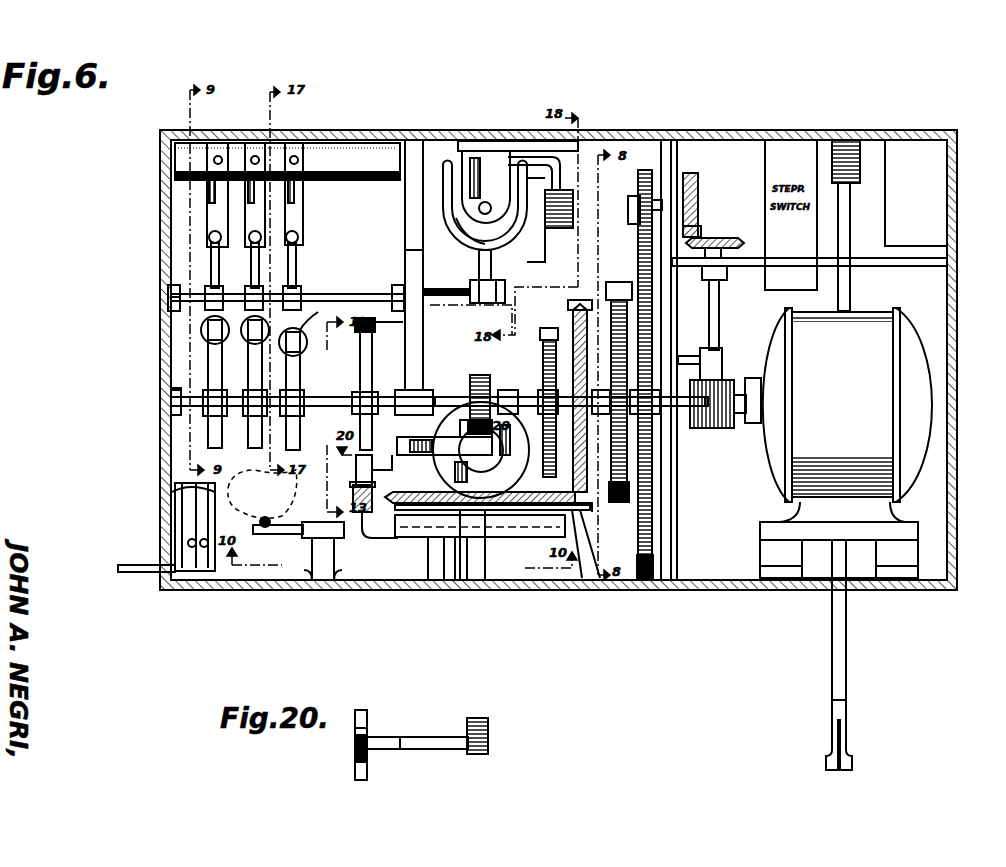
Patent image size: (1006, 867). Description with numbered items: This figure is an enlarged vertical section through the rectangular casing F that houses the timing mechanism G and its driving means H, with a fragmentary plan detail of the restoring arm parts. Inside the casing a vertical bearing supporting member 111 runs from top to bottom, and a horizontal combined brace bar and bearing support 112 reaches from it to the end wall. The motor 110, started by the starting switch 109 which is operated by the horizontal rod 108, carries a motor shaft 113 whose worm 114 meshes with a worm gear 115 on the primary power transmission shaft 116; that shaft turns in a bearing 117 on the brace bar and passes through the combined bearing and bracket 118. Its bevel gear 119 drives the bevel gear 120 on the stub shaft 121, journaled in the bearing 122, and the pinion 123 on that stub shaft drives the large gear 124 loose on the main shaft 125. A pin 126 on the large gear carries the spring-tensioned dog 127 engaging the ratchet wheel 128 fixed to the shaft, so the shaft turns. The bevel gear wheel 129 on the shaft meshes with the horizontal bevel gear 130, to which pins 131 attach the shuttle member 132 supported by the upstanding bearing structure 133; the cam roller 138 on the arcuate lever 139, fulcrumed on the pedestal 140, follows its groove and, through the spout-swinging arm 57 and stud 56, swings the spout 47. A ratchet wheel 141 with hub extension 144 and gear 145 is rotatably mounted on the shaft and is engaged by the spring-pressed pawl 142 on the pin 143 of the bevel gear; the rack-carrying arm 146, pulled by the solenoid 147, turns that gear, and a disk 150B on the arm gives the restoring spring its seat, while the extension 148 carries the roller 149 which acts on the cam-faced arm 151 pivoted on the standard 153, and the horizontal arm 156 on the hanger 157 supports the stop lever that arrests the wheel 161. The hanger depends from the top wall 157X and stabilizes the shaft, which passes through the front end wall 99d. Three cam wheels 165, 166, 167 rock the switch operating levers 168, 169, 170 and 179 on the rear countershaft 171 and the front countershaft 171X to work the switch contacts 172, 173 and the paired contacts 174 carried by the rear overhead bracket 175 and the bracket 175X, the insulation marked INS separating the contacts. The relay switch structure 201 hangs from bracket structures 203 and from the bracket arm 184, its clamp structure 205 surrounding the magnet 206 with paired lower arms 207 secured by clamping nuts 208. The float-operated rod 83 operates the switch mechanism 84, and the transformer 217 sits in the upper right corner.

In FIG. 6, the rear overhead bracket 175 is at (238, 160).
In FIG. 6, the bracket 175X is at (370, 156).
In FIG. 6, the top wall 157X is at (418, 150).
In FIG. 6, the bracket structures 203 is at (490, 160).
In FIG. 6, the stub shaft 121 is at (666, 140).
In FIG. 6, the switch mechanism 84 is at (846, 146).
In FIG. 6, the switch contact 172 is at (214, 192).
In FIG. 6, the switch contact 173 is at (250, 204).
In FIG. 6, the paired contacts 174 is at (303, 202).
In FIG. 6, the insulation INS is at (190, 598).
In FIG. 6, the relay switch structure 201 is at (445, 208).
In FIG. 6, the clamp structure 205 is at (525, 228).
In FIG. 6, the magnet 206 is at (457, 237).
In FIG. 6, the paired lower arms 207 is at (492, 262).
In FIG. 6, the clamping nuts 208 is at (505, 290).
In FIG. 6, the bracket arm 184 is at (450, 288).
In FIG. 6, the switch operating lever 168 is at (211, 256).
In FIG. 6, the switch operating lever 169 is at (258, 250).
In FIG. 6, the switch operating lever 170 is at (298, 256).
In FIG. 6, the front countershaft 171X is at (338, 296).
In FIG. 6, the rear countershaft 171 is at (172, 300).
In FIG. 6, the switch operating lever 179 is at (316, 316).
In FIG. 6, the horizontal arm 156 is at (370, 334).
In FIG. 6, the wheel 161 is at (379, 390).
In FIG. 6, the ratchet wheel 141 is at (545, 380).
In FIG. 6, the hanger 157 is at (423, 372).
In FIG. 6, the gear 145 is at (480, 376).
In FIG. 6, the spring-pressed pawl 142 is at (541, 334).
In FIG. 6, the pin 143 is at (566, 408).
In FIG. 6, the bevel gear wheel 129 is at (572, 316).
In FIG. 6, the bearing 122 is at (686, 200).
In FIG. 6, the bevel gear 120 is at (700, 204).
In FIG. 6, the bevel gear 119 is at (714, 240).
In FIG. 6, the pin 126 is at (640, 252).
In FIG. 6, the spring-tensioned dog 127 is at (618, 296).
In FIG. 6, the pinion 123 is at (638, 180).
In FIG. 6, the main shaft 125 is at (330, 390).
In FIG. 6, the cam wheel 166 is at (250, 416).
In FIG. 6, the cam wheel 167 is at (298, 418).
In FIG. 6, the front end wall 99d is at (171, 372).
In FIG. 6, the cam wheel 165 is at (218, 446).
In FIG. 6, the extension 148 is at (442, 434).
In FIG. 20, the extension 148 is at (414, 736).
In FIG. 6, the rack-carrying arm 146 is at (470, 440).
In FIG. 20, the rack-carrying arm 146 is at (490, 736).
In FIG. 6, the solenoid 147 is at (508, 464).
In FIG. 6, the pins 131 is at (530, 520).
In FIG. 6, the disc 150B is at (481, 450).
In FIG. 6, the cylindrical hub extension 144 is at (512, 396).
In FIG. 6, the roller 149 is at (380, 465).
In FIG. 20, the roller 149 is at (355, 752).
In FIG. 6, the cam-faced arm 151 is at (356, 490).
In FIG. 20, the cam-faced arm 151 is at (366, 778).
In FIG. 6, the swingable spout 47 is at (273, 494).
In FIG. 6, the stud 56 is at (265, 518).
In FIG. 6, the spout-swinging arm 57 is at (278, 540).
In FIG. 6, the starting switch 109 is at (172, 526).
In FIG. 6, the horizontal rod 108 is at (128, 565).
In FIG. 6, the standard 153 is at (372, 540).
In FIG. 6, the pedestal 140 is at (320, 562).
In FIG. 6, the arcuate lever 139 is at (428, 586).
In FIG. 6, the cam roller 138 is at (440, 592).
In FIG. 6, the upstanding bearing structure 133 is at (440, 580).
In FIG. 6, the shuttle member 132 is at (572, 582).
In FIG. 6, the horizontal bevel gear 130 is at (598, 582).
In FIG. 6, the large gear 124 is at (645, 590).
In FIG. 6, the ratchet wheel 128 is at (614, 504).
In FIG. 6, the bearing supporting member 111 is at (678, 560).
In FIG. 6, the casing F is at (532, 595).
In FIG. 6, the bearing 117 is at (704, 278).
In FIG. 6, the primary power transmission shaft 116 is at (720, 310).
In FIG. 6, the combined bearing and bracket 118 is at (700, 352).
In FIG. 6, the worm gear 115 is at (725, 378).
In FIG. 6, the worm 114 is at (692, 420).
In FIG. 6, the motor shaft 113 is at (748, 425).
In FIG. 6, the timing mechanism G is at (655, 470).
In FIG. 6, the driving means H is at (778, 480).
In FIG. 6, the motor 110 is at (848, 316).
In FIG. 6, the combined brace bar and bearing support 112 is at (947, 262).
In FIG. 6, the transformer 217 is at (928, 220).
In FIG. 6, the float-operated rod 83 is at (846, 648).